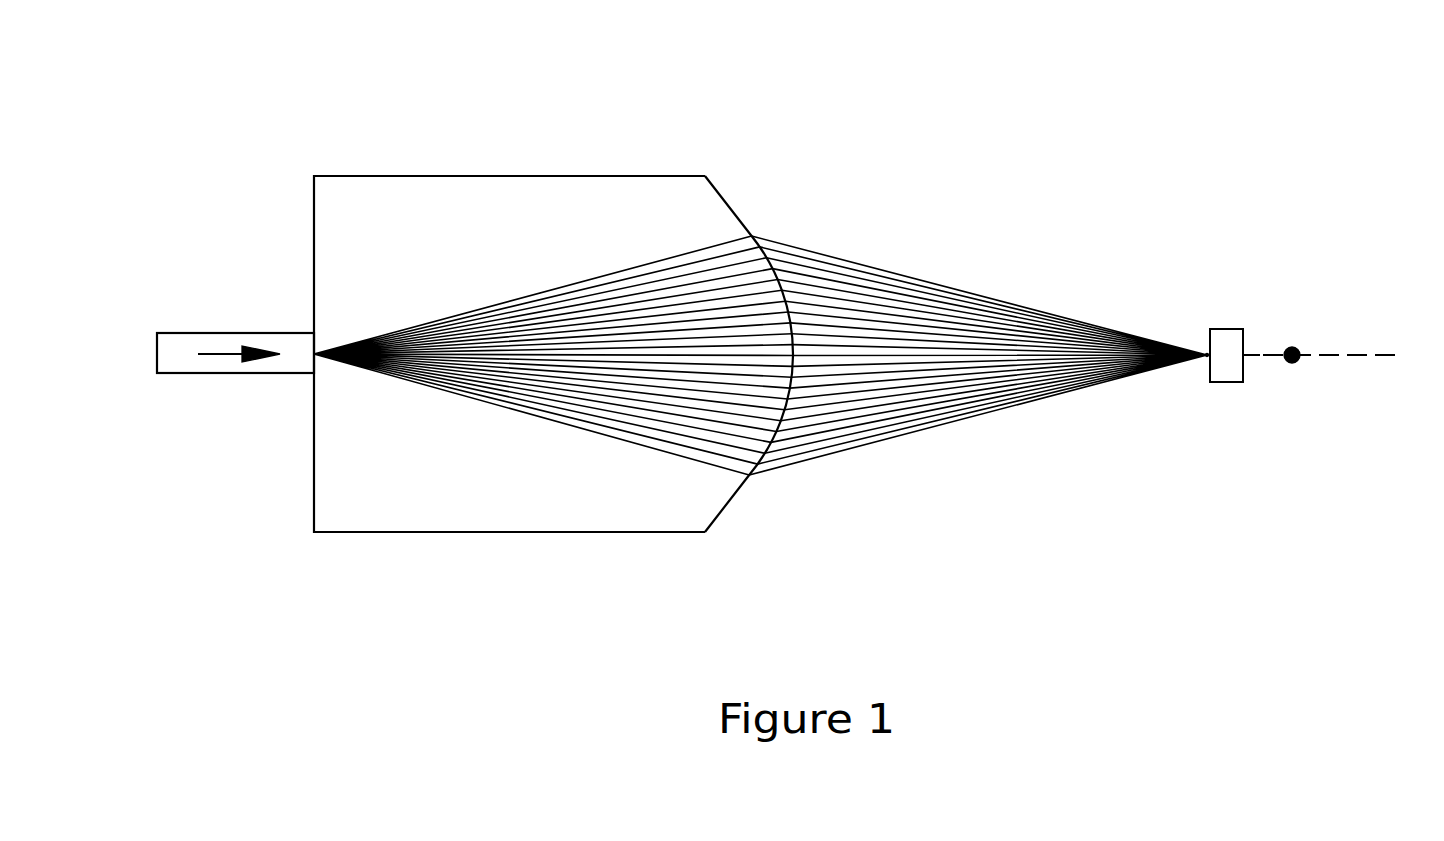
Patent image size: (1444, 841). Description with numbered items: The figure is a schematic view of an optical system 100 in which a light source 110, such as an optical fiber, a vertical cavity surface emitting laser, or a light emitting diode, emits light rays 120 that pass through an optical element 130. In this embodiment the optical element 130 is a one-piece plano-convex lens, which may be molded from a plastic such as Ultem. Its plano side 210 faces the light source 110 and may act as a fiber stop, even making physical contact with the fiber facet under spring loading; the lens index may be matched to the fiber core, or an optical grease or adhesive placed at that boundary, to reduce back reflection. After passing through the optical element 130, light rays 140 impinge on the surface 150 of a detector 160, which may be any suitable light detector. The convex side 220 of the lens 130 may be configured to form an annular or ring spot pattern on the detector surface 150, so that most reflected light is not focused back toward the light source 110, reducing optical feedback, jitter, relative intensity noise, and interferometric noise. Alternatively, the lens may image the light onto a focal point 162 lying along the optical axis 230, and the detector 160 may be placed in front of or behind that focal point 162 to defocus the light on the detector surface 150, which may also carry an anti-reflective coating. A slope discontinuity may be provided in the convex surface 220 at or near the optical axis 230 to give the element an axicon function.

The optical system 100 is at (561, 130).
The light source 110 is at (200, 333).
The light rays 120 is at (492, 307).
The optical element 130 is at (353, 175).
The light rays 140 is at (930, 282).
The detector surface 150 is at (1193, 327).
The detector 160 is at (1232, 329).
The focal point 162 is at (1290, 362).
The plano side 210 is at (314, 495).
The convex side 220 is at (730, 197).
The optical axis 230 is at (1333, 357).